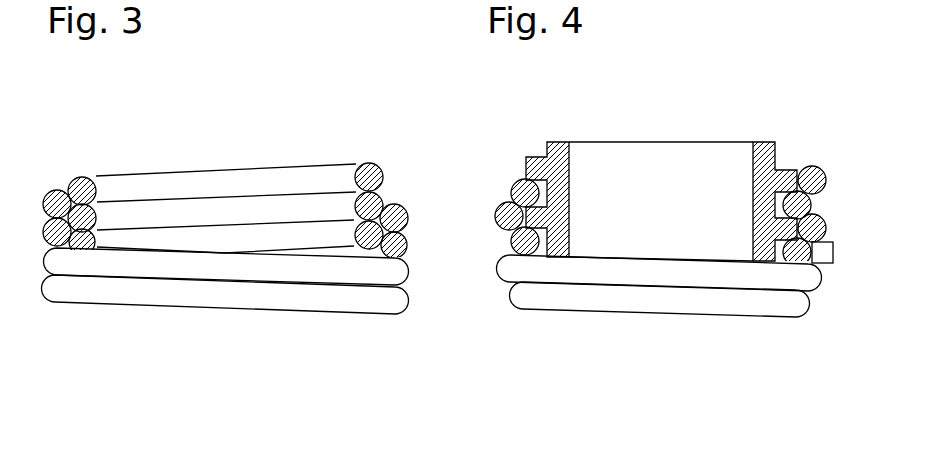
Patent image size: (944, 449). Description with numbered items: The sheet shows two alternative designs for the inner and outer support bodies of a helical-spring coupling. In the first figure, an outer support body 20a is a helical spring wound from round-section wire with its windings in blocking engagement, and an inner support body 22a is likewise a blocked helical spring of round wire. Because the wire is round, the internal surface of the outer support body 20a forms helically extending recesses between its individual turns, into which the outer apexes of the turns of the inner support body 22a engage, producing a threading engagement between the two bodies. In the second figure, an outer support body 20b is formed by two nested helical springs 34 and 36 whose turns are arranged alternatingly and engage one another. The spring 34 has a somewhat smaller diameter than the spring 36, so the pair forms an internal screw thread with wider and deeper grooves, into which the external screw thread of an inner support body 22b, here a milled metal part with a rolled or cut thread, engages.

In FIG. 3, the inner support body 22a is at (256, 180).
In FIG. 3, the outer support body 20a is at (218, 296).
In FIG. 4, the inner support body 22b is at (718, 141).
In FIG. 4, the outer support body 20b is at (659, 334).
In FIG. 4, the helical spring 34 is at (555, 293).
In FIG. 4, the helical spring 36 is at (615, 272).